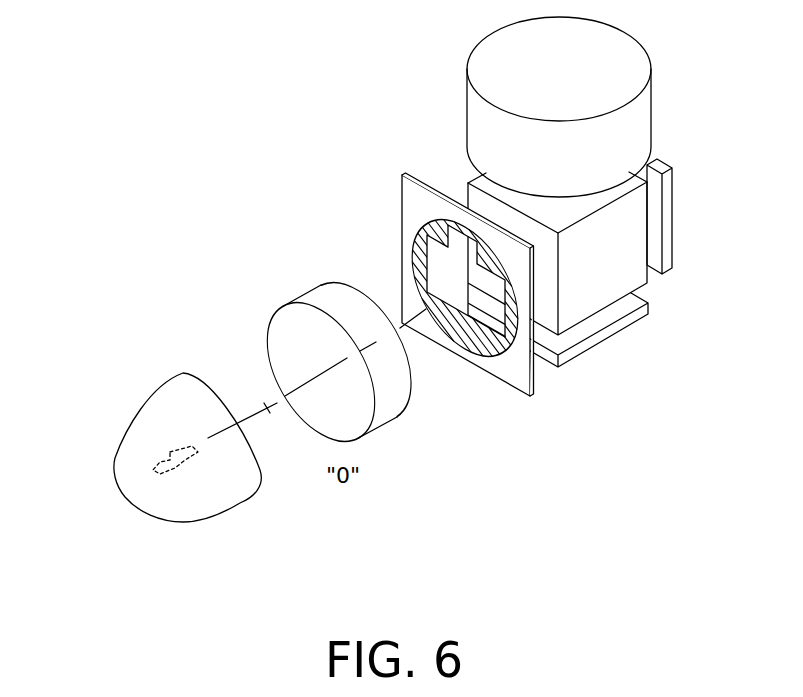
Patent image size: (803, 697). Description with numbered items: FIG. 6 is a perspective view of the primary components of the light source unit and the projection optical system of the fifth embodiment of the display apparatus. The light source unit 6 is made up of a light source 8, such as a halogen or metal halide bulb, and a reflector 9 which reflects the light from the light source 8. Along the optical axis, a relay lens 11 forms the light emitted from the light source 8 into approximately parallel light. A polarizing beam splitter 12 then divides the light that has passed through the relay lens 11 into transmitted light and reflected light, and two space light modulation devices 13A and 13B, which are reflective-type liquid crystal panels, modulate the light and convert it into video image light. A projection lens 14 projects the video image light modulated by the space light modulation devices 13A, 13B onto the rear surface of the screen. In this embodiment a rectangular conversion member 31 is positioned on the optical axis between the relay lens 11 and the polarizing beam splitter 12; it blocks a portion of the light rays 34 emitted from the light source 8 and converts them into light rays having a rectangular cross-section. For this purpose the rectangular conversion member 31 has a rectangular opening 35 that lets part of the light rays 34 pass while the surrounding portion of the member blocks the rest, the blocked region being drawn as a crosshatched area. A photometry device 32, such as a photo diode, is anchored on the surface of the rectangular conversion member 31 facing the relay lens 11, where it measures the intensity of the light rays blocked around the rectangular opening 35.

The light source unit 6 is at (186, 476).
The light source 8 is at (167, 452).
The reflector 9 is at (137, 403).
The relay lens 11 is at (390, 407).
The polarizing beam splitter 12 is at (622, 245).
The space light modulation device 13A is at (627, 307).
The space light modulation device 13B is at (673, 192).
The projection lens 14 is at (638, 127).
The rectangular conversion member 31 is at (507, 378).
The photometry device 32 is at (448, 224).
The light rays 34 is at (427, 247).
The rectangular opening 35 is at (460, 290).